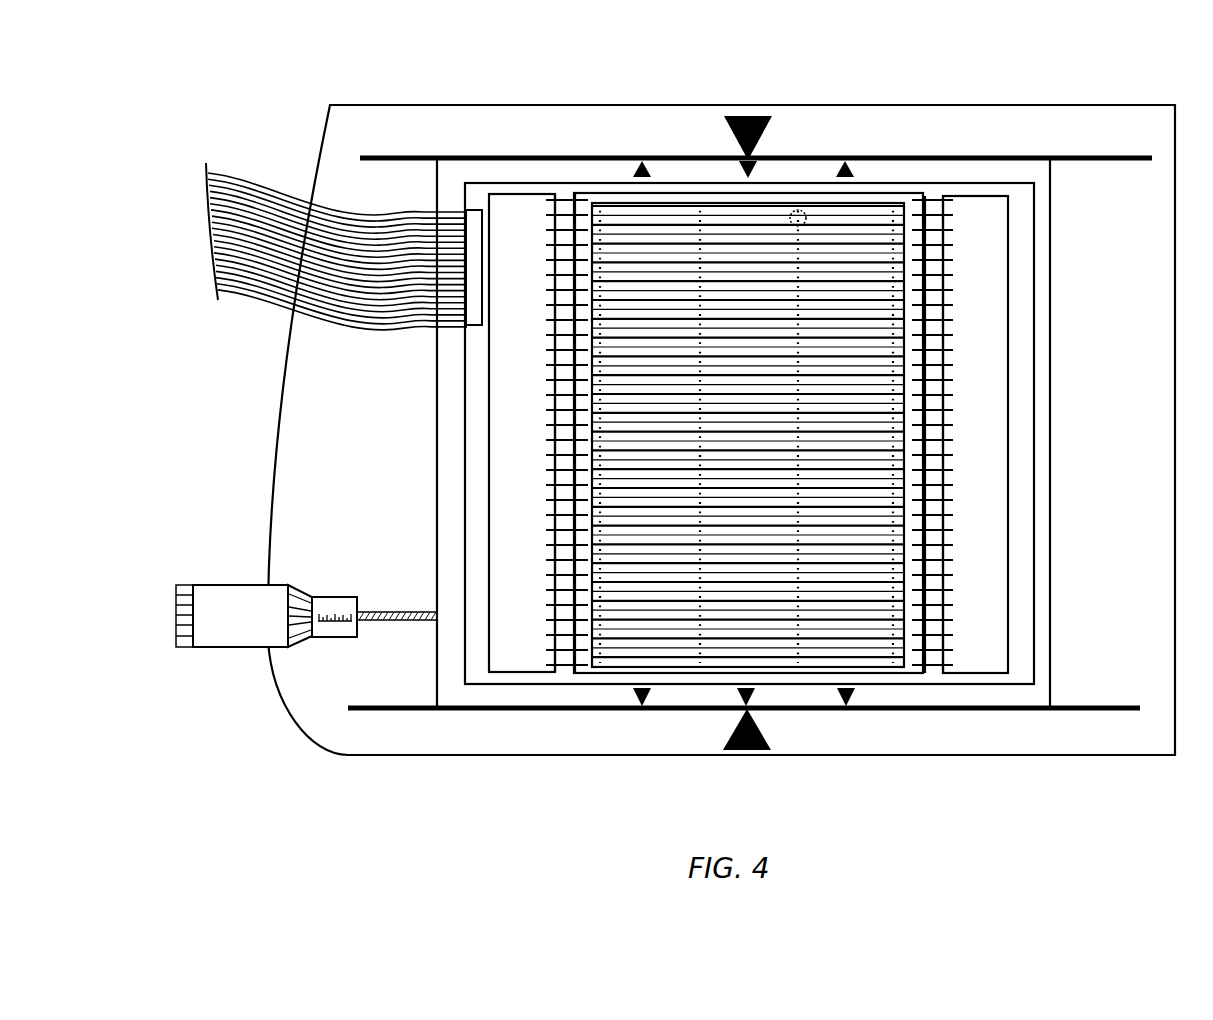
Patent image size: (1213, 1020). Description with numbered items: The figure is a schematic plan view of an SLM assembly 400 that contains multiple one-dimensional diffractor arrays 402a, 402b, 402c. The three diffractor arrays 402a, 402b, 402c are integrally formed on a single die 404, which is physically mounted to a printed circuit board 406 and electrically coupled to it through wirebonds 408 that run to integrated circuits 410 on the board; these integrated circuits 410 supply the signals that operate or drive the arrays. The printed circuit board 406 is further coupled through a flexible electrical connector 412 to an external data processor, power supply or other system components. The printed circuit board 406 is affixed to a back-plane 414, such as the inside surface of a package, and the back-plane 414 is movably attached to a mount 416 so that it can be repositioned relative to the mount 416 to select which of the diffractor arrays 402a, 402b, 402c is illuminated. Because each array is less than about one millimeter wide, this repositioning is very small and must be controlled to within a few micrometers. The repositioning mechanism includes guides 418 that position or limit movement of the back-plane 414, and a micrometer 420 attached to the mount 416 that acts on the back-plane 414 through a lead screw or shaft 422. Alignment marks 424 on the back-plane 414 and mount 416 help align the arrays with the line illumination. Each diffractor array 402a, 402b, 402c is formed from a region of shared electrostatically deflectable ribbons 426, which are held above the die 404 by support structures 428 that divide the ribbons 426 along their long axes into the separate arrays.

The SLM assembly 400 is at (264, 54).
The 1D diffractor array 402a is at (683, 452).
The 1D diffractor array 402b is at (775, 452).
The 1D diffractor array 402c is at (873, 452).
The die 404 is at (914, 190).
The printed circuit board 406 is at (466, 467).
The wirebonds 408 is at (940, 200).
The integrated circuits 410 is at (748, 433).
The flexible electrical connector 412 is at (341, 328).
The back-plane 414 is at (436, 422).
The mount 416 is at (272, 443).
The guides 418 is at (1125, 163).
The micrometer 420 is at (230, 584).
The lead screw or shaft 422 is at (395, 611).
The alignment marks 424 is at (708, 740).
The electrostatically deflectable ribbons 426 is at (856, 210).
The support structures 428 is at (797, 210).